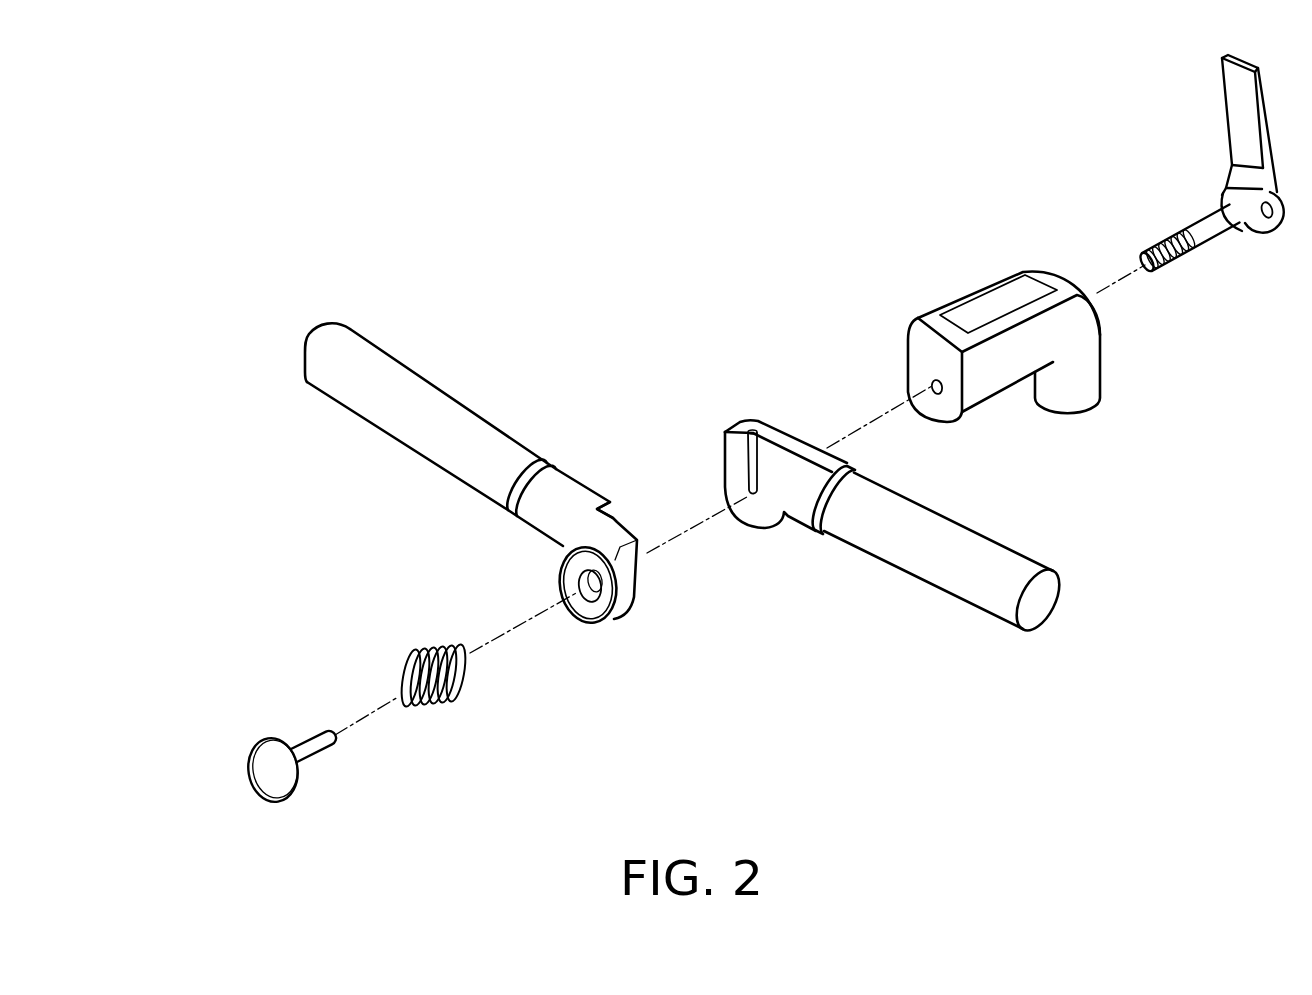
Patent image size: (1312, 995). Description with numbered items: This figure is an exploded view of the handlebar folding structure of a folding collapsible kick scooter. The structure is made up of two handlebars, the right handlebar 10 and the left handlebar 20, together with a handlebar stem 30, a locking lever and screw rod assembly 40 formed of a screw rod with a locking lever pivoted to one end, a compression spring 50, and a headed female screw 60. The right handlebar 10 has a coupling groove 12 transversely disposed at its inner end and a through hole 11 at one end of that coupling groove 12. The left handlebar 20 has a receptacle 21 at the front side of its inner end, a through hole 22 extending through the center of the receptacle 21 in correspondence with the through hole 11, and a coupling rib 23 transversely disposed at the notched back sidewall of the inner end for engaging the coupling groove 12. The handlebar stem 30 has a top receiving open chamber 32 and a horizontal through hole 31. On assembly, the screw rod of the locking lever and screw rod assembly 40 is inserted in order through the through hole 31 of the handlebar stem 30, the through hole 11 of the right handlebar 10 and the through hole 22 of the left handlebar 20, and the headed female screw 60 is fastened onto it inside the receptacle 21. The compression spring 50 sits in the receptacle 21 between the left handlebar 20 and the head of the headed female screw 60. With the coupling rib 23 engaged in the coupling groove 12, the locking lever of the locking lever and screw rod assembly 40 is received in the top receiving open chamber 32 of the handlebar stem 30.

The right handlebar 10 is at (856, 513).
The through hole 11 is at (753, 490).
The coupling groove 12 is at (752, 432).
The left handlebar 20 is at (343, 362).
The receptacle 21 is at (556, 563).
The through hole 22 is at (583, 590).
The coupling rib 23 is at (620, 530).
The handlebar stem 30 is at (1009, 287).
The through hole 31 is at (931, 385).
The top receiving open chamber 32 is at (997, 295).
The locking lever and screw rod assembly 40 is at (1240, 113).
The compression spring 50 is at (464, 694).
The headed female screw 60 is at (270, 763).